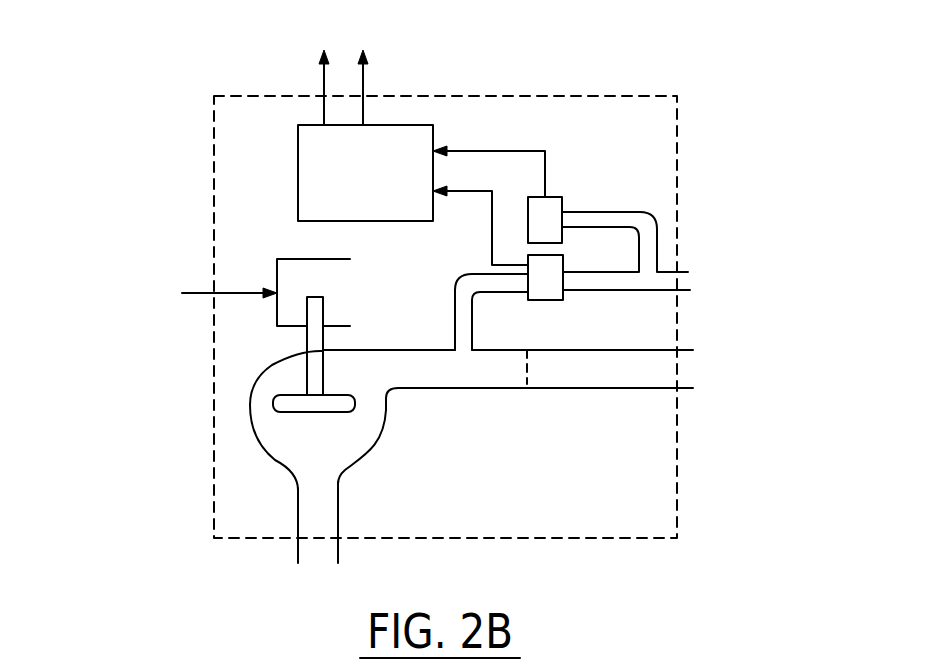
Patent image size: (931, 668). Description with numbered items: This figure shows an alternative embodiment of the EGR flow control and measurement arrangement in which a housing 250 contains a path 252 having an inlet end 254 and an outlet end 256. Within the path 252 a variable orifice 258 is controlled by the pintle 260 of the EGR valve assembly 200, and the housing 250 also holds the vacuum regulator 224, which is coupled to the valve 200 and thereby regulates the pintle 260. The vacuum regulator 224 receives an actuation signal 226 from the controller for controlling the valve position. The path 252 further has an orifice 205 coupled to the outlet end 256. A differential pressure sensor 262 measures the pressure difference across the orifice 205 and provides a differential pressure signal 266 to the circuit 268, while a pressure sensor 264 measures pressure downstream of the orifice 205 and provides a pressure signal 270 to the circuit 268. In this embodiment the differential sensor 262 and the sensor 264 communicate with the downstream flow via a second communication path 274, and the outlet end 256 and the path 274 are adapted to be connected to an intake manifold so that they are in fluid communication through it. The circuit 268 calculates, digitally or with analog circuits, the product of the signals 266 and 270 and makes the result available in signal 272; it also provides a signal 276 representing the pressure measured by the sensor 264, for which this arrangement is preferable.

The EGR valve assembly 200 is at (266, 430).
The orifice 205 is at (544, 372).
The vacuum regulator 224 is at (295, 258).
The actuation signal 226 is at (198, 292).
The housing 250 is at (608, 95).
The path 252 is at (417, 390).
The inlet end 254 is at (343, 508).
The outlet end 256 is at (617, 390).
The variable orifice 258 is at (263, 428).
The pintle 260 is at (268, 400).
The differential pressure sensor 262 is at (551, 302).
The pressure sensor 264 is at (560, 194).
The differential pressure signal 266 is at (487, 212).
The circuit 268 is at (395, 179).
The pressure signal 270 is at (463, 149).
The signal 272 is at (366, 72).
The second communication path 274 is at (655, 291).
The signal 276 is at (318, 72).